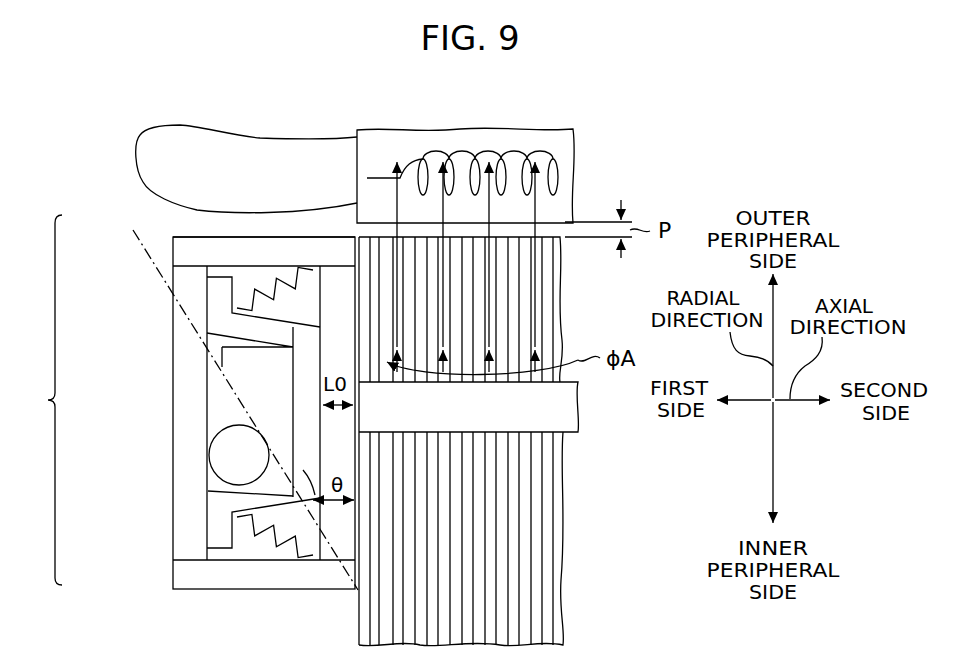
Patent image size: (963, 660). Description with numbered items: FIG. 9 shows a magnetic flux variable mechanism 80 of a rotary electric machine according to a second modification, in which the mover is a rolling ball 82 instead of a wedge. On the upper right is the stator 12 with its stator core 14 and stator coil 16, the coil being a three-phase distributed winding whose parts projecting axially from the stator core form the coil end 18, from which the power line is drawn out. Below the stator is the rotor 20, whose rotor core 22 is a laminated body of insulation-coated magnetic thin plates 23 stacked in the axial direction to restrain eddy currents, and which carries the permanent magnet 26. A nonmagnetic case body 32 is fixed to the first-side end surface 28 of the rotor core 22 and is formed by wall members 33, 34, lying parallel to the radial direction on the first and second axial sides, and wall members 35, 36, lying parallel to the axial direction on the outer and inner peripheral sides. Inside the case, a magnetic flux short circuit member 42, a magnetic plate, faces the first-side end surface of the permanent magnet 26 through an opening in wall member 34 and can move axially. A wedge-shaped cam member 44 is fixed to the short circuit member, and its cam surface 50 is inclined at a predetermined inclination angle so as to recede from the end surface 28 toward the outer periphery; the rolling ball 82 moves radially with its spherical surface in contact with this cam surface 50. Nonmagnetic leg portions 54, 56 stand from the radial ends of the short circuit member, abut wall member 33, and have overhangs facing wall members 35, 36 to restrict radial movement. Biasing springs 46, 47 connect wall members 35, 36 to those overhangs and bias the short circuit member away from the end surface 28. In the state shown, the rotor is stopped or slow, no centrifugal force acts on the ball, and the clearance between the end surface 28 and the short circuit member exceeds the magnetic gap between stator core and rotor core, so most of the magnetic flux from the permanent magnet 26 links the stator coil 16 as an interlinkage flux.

The stator 12 is at (590, 165).
The stator core 14 is at (428, 150).
The stator coil 16 is at (487, 150).
The coil end 18 is at (228, 157).
The rotor 20 is at (462, 441).
The rotor core 22 is at (565, 282).
The magnetic thin plates 23 is at (548, 318).
The permanent magnet 26 is at (562, 405).
The end surface 28 is at (355, 624).
The case body 32 is at (209, 365).
The wall member 33 is at (187, 409).
The wall member 34 is at (340, 280).
The wall member 35 is at (290, 250).
The wall member 36 is at (262, 578).
The magnetic flux short circuit member 42 is at (215, 497).
The cam member 44 is at (222, 350).
The biasing spring 46 is at (266, 273).
The biasing spring 47 is at (258, 541).
The cam surface 50 is at (224, 392).
The leg portion 54 is at (218, 317).
The leg portion 56 is at (220, 537).
The magnetic flux variable mechanism 80 is at (36, 400).
The rolling ball 82 is at (220, 456).